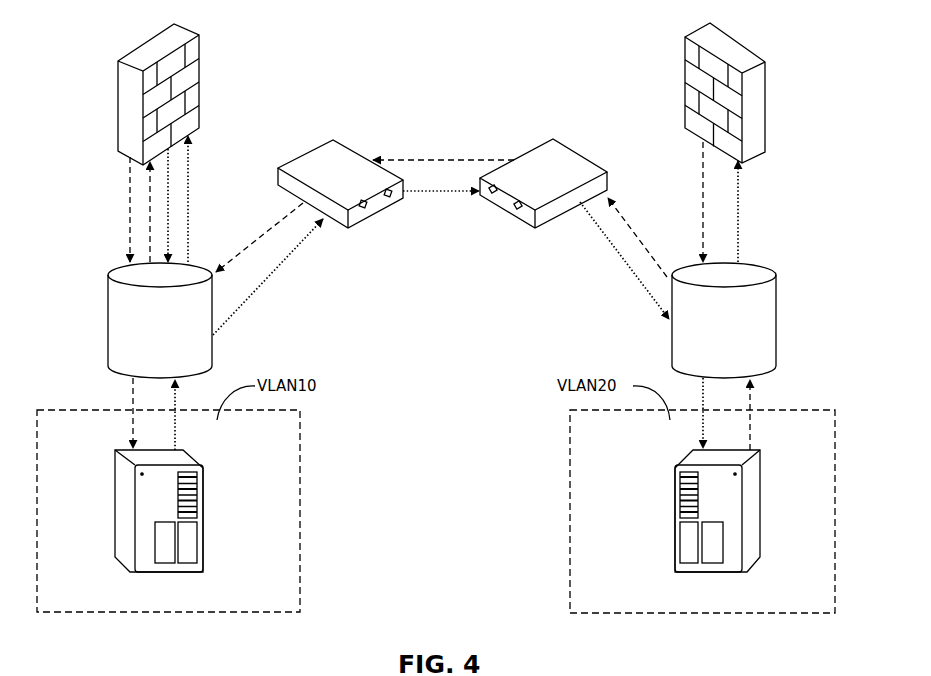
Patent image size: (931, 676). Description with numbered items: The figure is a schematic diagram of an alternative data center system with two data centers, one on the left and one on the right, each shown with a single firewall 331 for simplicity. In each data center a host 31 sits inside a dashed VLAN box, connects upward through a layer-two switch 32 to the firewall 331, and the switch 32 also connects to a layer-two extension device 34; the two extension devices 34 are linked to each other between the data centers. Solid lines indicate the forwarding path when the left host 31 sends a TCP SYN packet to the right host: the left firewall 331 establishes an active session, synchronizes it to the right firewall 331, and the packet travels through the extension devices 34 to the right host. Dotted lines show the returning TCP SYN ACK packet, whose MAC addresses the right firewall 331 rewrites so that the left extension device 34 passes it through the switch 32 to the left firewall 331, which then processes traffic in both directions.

The firewall 331 is at (170, 50).
The layer-2 switch 32 is at (118, 268).
The layer-2 extension device 34 is at (327, 153).
The host 31 is at (122, 458).